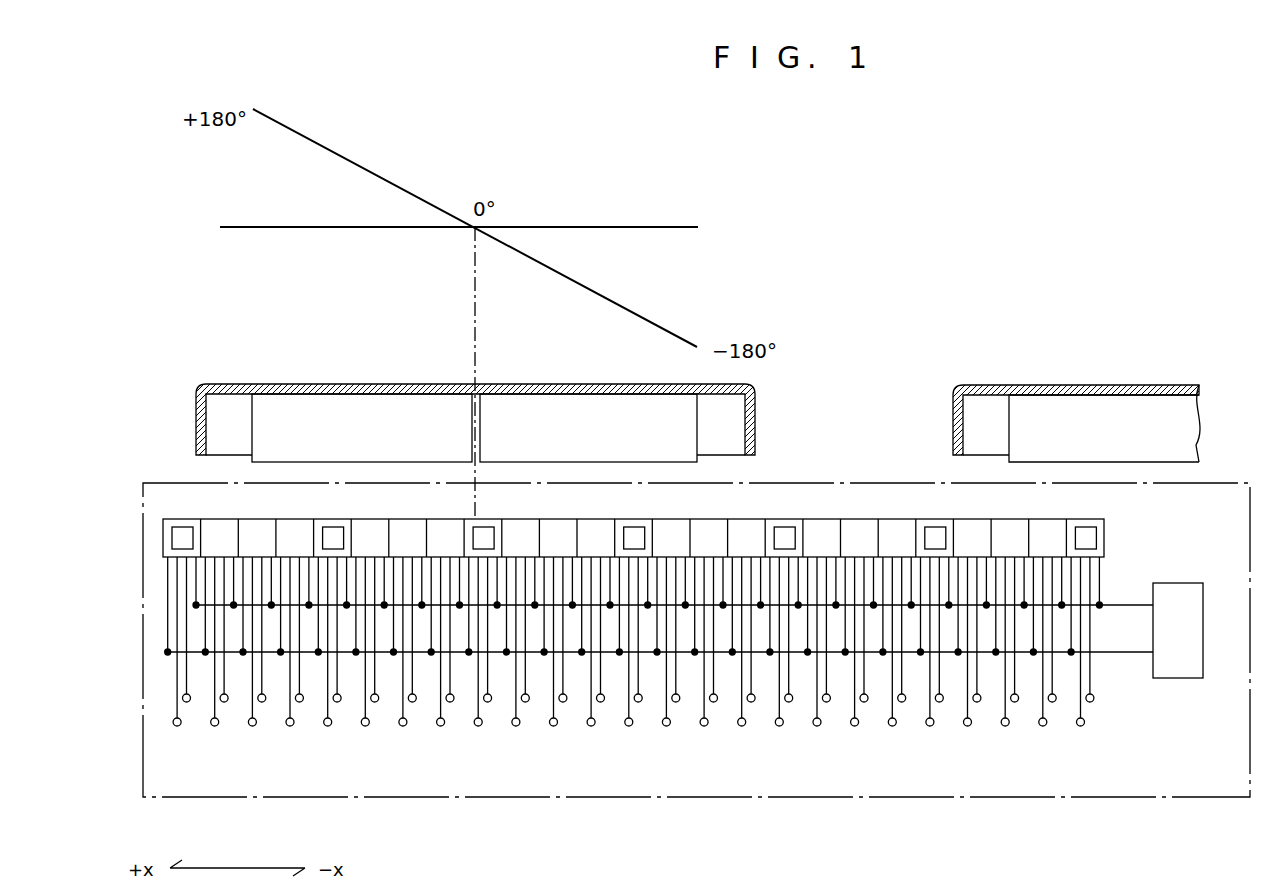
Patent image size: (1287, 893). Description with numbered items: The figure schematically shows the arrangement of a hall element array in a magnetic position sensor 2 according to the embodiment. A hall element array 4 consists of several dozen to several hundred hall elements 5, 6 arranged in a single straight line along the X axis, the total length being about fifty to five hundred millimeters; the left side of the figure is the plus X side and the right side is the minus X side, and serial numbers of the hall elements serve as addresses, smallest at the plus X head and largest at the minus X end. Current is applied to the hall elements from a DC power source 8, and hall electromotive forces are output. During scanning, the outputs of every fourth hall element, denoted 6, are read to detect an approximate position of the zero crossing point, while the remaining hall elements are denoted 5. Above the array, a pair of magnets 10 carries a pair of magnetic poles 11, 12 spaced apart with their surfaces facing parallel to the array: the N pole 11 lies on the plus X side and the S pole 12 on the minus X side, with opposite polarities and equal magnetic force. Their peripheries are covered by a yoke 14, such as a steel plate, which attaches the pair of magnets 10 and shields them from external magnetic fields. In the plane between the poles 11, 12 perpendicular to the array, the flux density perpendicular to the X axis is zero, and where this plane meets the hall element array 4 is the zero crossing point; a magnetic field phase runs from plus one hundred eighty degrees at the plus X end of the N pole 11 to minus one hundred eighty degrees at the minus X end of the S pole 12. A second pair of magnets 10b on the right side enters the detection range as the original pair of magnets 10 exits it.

The magnetic position sensor 2 is at (724, 851).
The hall element array 4 is at (1120, 539).
The hall element 5 is at (299, 527).
The hall element 6 is at (183, 523).
The DC power source 8 is at (1178, 672).
The pair of magnets 10 is at (529, 375).
The pair of magnets 10b is at (1124, 376).
The N pole 11 is at (267, 455).
The S pole 12 is at (677, 452).
The yoke 14 is at (755, 418).